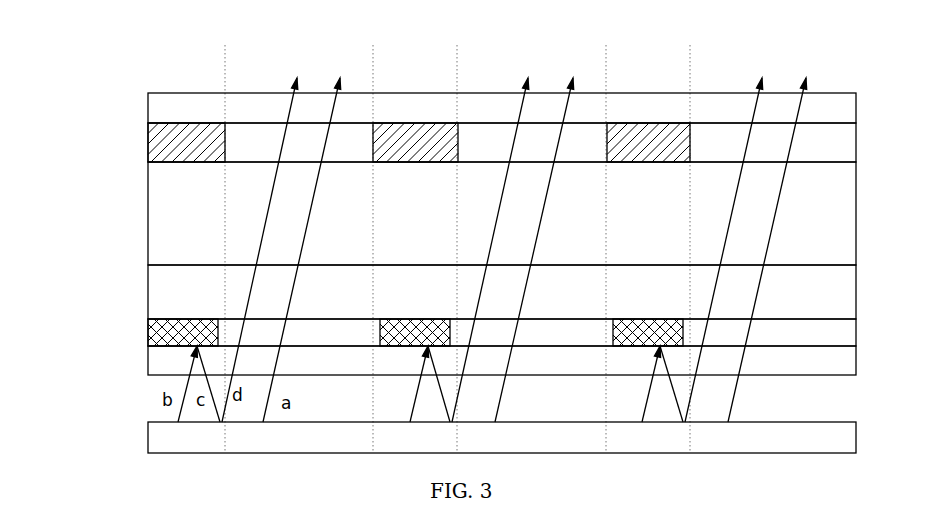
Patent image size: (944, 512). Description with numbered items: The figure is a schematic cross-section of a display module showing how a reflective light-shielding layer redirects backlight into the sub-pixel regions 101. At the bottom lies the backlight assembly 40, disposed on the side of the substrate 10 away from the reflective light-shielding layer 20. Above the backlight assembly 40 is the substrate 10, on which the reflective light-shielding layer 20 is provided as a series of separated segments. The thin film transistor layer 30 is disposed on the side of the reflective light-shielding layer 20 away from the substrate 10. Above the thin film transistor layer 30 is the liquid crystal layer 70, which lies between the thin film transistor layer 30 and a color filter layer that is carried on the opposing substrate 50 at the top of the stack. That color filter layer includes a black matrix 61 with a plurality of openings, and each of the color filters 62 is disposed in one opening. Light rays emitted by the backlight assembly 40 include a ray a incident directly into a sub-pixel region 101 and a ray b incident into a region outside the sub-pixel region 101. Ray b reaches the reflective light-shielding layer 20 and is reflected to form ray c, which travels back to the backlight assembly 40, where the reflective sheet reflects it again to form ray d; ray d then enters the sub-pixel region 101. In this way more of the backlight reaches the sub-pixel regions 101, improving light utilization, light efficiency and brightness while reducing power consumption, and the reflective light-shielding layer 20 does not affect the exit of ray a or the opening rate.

The substrate 10 is at (148, 362).
The reflective light-shielding layer 20 is at (148, 332).
The thin film transistor layer 30 is at (148, 290).
The backlight assembly 40 is at (148, 435).
The opposing substrate 50 is at (148, 110).
The black matrix 61 is at (170, 143).
The color filters 62 is at (300, 140).
The liquid crystal layer 70 is at (148, 225).
The sub-pixel regions 101 is at (320, 70).